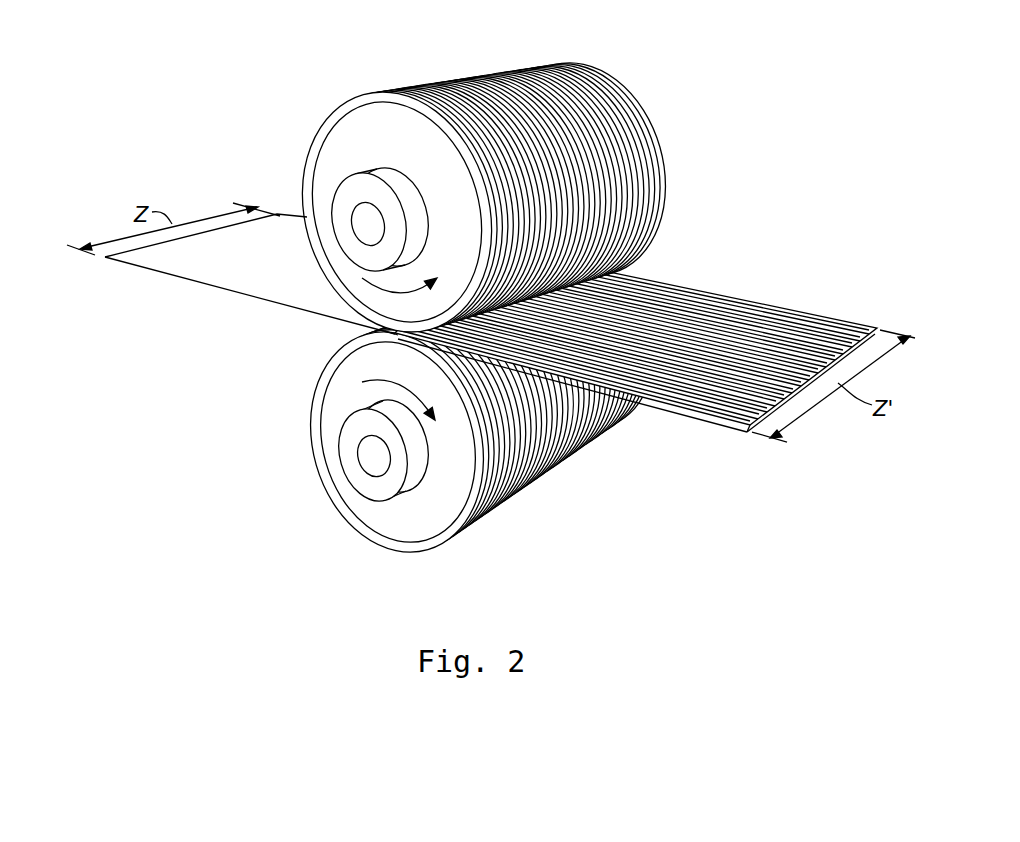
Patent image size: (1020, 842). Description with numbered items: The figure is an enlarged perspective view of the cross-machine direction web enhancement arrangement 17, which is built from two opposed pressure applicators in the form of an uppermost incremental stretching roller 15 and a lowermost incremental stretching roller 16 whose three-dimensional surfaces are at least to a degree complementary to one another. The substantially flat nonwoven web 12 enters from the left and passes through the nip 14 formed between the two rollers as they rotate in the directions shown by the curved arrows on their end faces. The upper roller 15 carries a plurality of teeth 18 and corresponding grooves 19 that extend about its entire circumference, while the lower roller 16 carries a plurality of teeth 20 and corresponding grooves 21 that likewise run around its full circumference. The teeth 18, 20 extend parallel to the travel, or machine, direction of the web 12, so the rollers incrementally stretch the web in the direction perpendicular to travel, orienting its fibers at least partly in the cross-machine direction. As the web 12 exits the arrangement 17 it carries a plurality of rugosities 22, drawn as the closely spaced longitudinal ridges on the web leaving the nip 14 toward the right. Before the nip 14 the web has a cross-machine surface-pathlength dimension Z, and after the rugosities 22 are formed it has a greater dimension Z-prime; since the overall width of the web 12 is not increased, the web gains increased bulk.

The nonwoven web 12 is at (284, 272).
The nip 14 is at (334, 332).
The incremental stretching roller 15 is at (328, 152).
The incremental stretching roller 16 is at (372, 512).
The cross-machine direction web enhancement arrangement 17 is at (474, 194).
The teeth 18 is at (368, 92).
The grooves 19 is at (432, 74).
The teeth 20 is at (440, 556).
The grooves 21 is at (498, 505).
The rugosities 22 is at (788, 396).